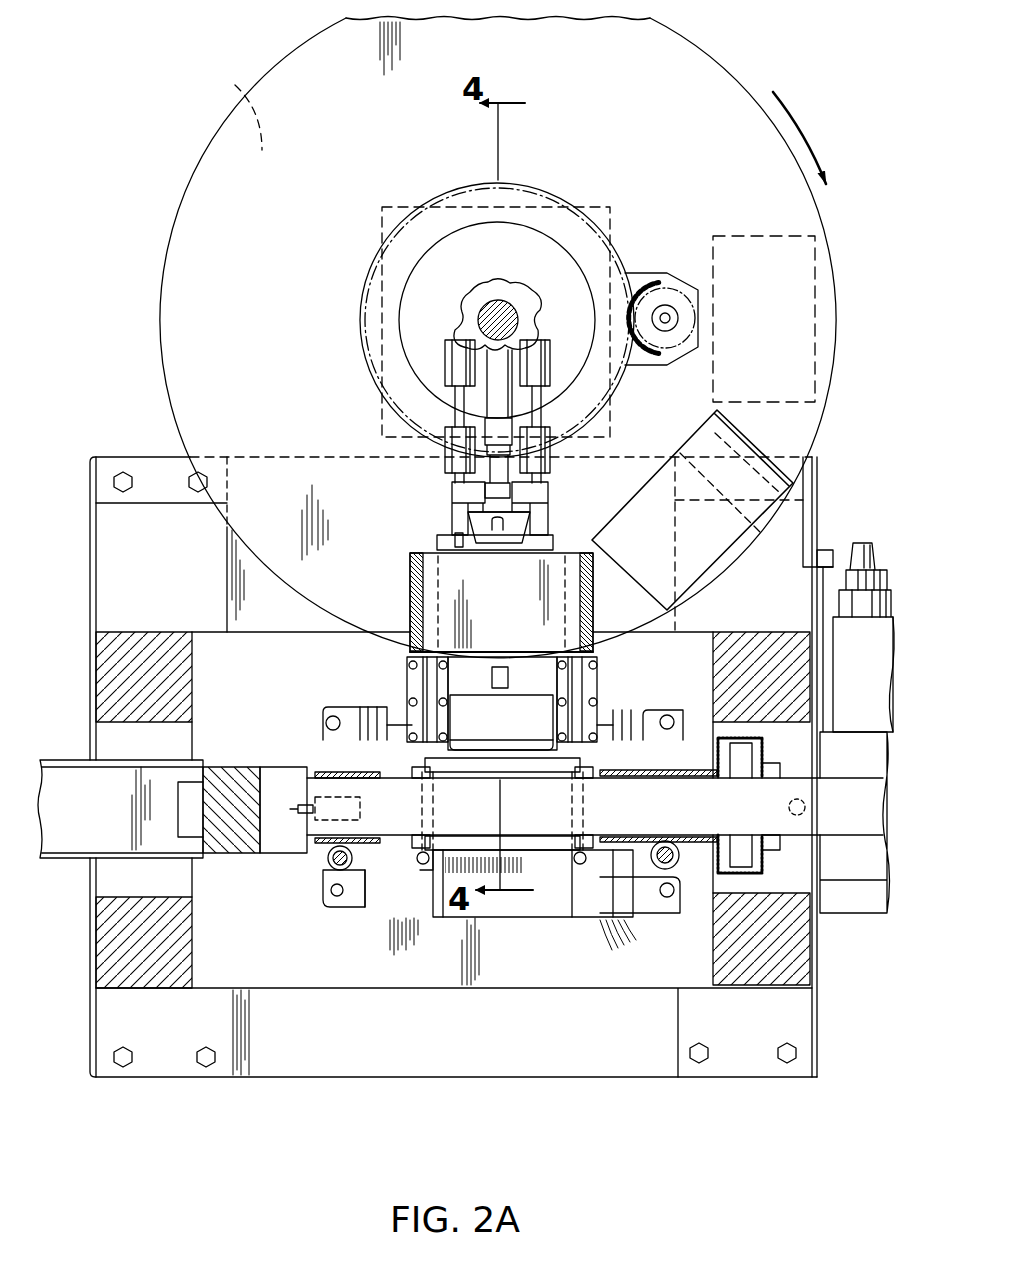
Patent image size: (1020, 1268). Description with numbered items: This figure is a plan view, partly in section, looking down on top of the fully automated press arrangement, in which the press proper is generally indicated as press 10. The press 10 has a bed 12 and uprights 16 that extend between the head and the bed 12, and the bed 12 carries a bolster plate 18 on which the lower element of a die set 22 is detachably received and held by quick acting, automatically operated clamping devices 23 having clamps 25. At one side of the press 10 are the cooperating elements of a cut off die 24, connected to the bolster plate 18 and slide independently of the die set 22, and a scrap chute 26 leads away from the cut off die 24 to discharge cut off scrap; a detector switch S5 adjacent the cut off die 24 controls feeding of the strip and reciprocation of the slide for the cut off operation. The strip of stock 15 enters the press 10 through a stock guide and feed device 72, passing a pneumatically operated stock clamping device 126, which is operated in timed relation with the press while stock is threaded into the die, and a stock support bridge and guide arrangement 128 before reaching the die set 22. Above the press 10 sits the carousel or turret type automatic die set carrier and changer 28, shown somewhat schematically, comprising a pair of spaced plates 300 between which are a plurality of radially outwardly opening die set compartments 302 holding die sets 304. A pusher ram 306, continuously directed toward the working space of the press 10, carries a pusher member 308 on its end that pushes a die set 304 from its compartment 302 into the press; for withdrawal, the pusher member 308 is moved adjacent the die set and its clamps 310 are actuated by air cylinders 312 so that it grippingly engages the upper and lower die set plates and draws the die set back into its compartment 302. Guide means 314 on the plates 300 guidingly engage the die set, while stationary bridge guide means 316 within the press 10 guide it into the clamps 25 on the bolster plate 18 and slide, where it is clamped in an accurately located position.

The press 10 is at (146, 452).
The press bed 12 is at (410, 1035).
The strip of stock 15 is at (852, 790).
The uprights 16 is at (96, 660).
The bolster plate 18 is at (510, 972).
The die set 22 is at (440, 553).
The clamping devices 23 is at (405, 897).
The cut off die 24 is at (290, 768).
The clamps 25 is at (503, 810).
The scrap chute 26 is at (75, 785).
The die set carrier and changer 28 is at (178, 208).
The stock guide and feed device 72 is at (863, 633).
The stock clamping device 126 is at (790, 804).
The stock support bridge and guide arrangement 128 is at (700, 873).
The spaced plates 300 is at (172, 283).
The die set compartments 302 is at (318, 58).
The die sets 304 is at (763, 452).
The pusher ram 306 is at (548, 502).
The pusher member 308 is at (505, 545).
The clamps 310 is at (548, 526).
The air cylinders 312 is at (442, 468).
The guide means 314 is at (410, 600).
The bridge guide means 316 is at (412, 670).
The detector switch S5 is at (338, 800).